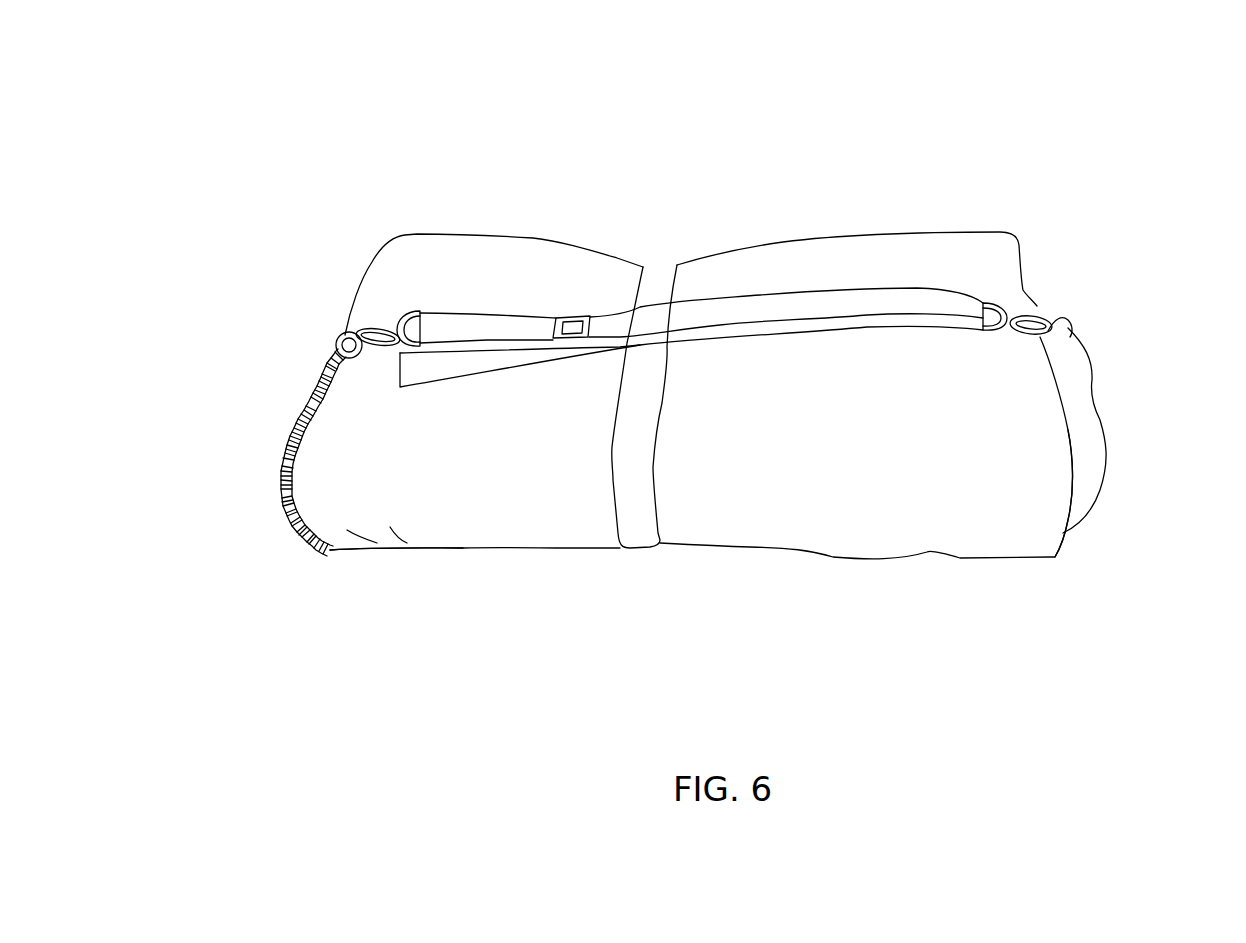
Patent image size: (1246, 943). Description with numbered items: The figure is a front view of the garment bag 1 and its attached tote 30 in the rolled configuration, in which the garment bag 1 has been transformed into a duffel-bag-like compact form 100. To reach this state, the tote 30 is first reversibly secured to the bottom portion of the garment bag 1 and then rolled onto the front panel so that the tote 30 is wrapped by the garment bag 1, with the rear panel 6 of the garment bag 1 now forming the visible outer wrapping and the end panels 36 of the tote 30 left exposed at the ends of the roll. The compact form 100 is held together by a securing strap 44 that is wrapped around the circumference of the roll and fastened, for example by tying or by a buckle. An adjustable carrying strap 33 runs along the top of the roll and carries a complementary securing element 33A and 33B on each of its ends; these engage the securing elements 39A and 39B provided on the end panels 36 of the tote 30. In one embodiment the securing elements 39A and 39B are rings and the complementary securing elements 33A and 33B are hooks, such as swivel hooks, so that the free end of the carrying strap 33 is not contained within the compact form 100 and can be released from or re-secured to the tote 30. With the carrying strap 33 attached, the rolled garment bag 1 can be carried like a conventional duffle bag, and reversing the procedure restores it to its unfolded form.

The compact form 100 is at (1085, 128).
The garment bag 1 is at (370, 225).
The rear panel 6 is at (453, 500).
The tote 30 is at (1113, 475).
The end panels 36 is at (1087, 398).
The securing strap 44 is at (660, 280).
The adjustable carrying strap 33 is at (917, 300).
The complementary securing element 33A is at (400, 345).
The complementary securing element 33B is at (1037, 310).
The securing element 39A is at (343, 340).
The securing element 39B is at (1070, 320).